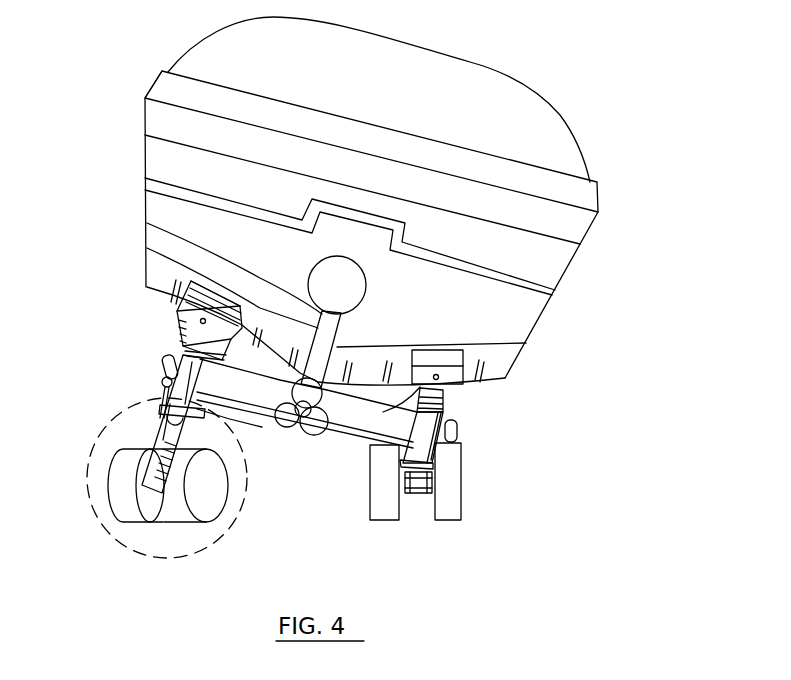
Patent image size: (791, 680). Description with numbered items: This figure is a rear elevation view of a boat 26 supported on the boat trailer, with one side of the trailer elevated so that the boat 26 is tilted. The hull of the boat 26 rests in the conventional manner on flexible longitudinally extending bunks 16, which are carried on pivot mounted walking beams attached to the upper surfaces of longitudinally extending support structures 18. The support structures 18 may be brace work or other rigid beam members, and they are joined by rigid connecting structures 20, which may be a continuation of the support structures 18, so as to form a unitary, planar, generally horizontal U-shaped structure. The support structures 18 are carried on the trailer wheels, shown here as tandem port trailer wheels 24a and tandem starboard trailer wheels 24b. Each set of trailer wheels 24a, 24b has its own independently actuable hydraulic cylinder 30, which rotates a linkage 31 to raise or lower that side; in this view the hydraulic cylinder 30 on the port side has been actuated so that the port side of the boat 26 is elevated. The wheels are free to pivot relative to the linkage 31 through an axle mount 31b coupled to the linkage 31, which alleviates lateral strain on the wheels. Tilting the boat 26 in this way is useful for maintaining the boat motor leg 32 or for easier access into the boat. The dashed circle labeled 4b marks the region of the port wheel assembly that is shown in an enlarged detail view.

The boat 26 is at (603, 212).
The boat motor leg 32 is at (147, 223).
The bunks 16 is at (180, 283).
The support structures 18 is at (177, 342).
The hydraulic cylinder 30 is at (165, 357).
The linkage 31 is at (160, 395).
The port trailer wheels 24a is at (109, 480).
The detail region 4b is at (110, 530).
The connecting structures 20 is at (465, 382).
The starboard trailer wheels 24b is at (456, 475).
The axle mount 31b is at (408, 493).